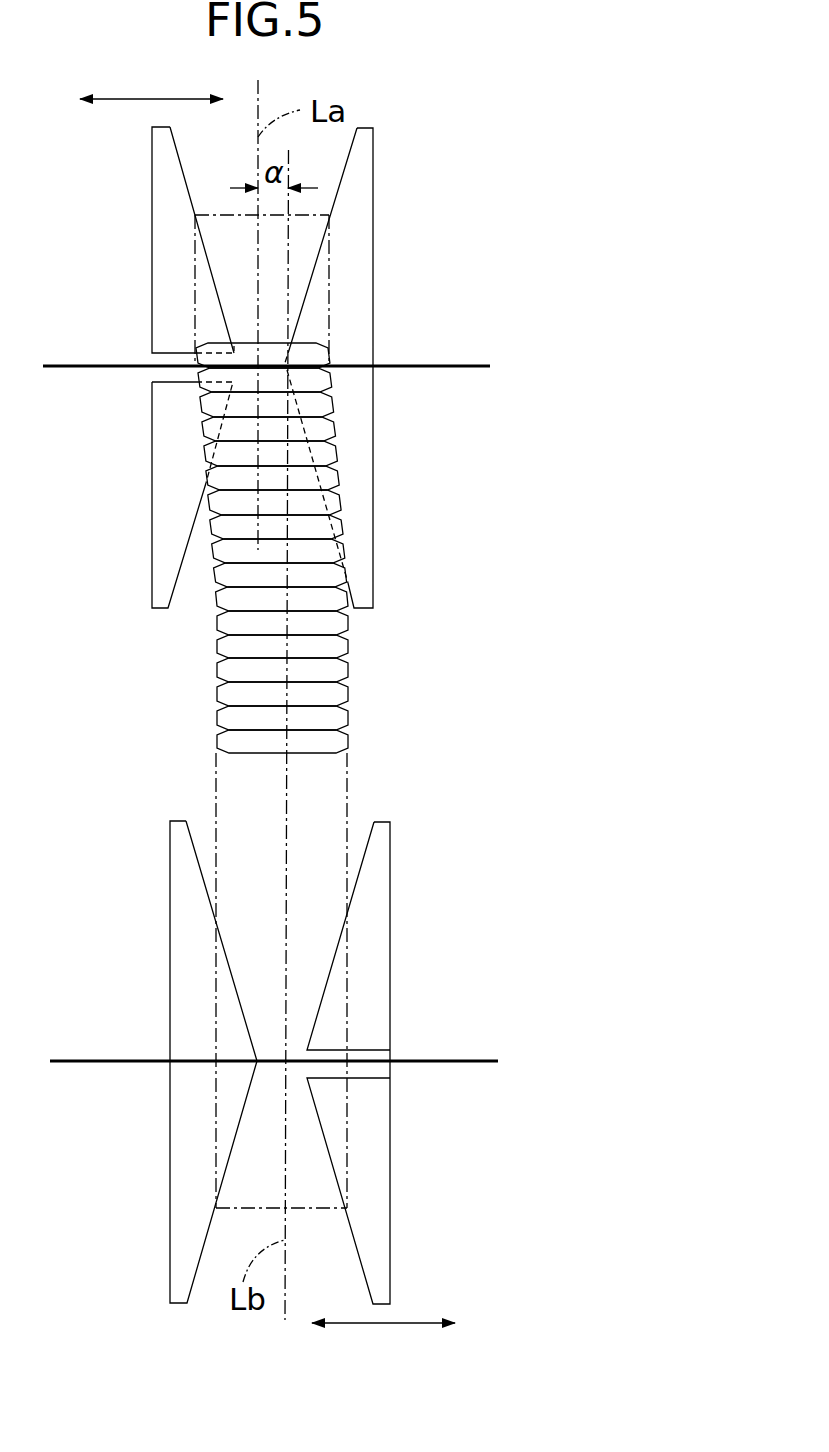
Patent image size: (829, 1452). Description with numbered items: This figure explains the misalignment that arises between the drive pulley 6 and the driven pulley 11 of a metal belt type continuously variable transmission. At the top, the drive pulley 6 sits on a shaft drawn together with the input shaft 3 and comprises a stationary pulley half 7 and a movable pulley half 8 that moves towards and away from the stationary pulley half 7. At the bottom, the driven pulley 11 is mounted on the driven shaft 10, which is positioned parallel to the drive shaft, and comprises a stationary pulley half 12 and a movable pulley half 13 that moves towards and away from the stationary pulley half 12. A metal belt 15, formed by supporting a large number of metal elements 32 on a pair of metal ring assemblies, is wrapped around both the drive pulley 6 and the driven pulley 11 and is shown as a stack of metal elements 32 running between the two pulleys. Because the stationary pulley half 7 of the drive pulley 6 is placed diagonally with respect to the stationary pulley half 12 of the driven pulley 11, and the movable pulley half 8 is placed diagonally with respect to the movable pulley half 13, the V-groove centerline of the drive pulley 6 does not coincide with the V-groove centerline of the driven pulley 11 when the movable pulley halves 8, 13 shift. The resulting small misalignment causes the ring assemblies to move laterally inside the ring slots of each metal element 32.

The input shaft 3 is at (455, 364).
The drive pulley 6 is at (283, 367).
The stationary pulley half 7 is at (373, 313).
The movable pulley half 8 is at (170, 278).
The driven shaft 10 is at (450, 1060).
The driven pulley 11 is at (301, 1062).
The stationary pulley half 12 is at (187, 990).
The movable pulley half 13 is at (372, 967).
The metal belt 15 is at (318, 548).
The metal element 32 is at (228, 718).